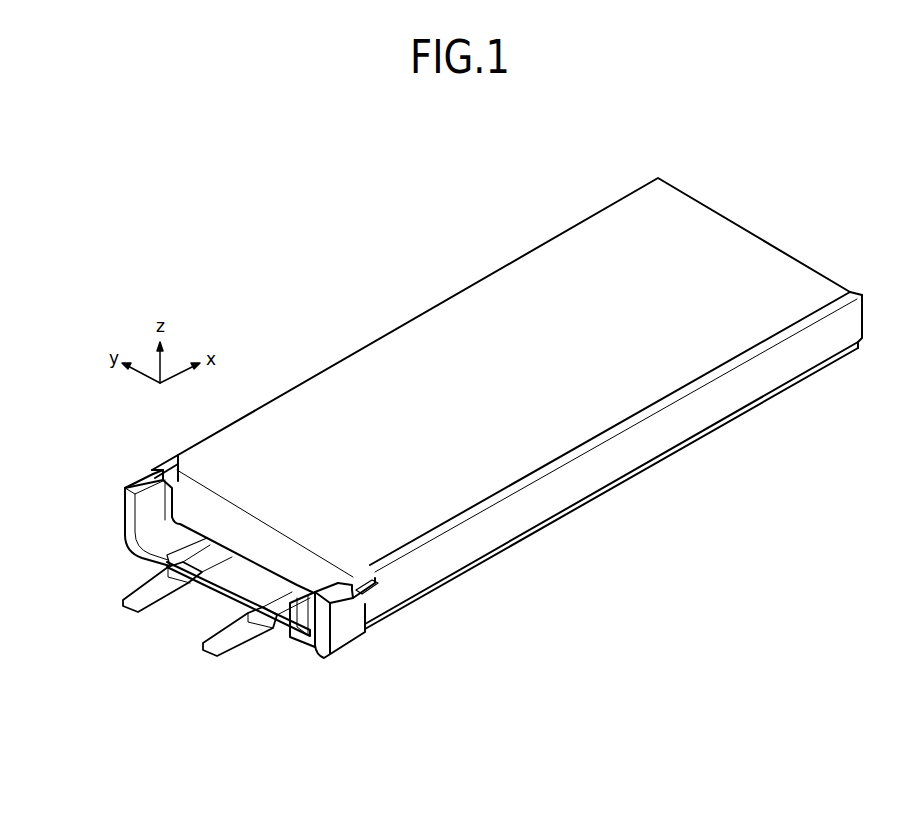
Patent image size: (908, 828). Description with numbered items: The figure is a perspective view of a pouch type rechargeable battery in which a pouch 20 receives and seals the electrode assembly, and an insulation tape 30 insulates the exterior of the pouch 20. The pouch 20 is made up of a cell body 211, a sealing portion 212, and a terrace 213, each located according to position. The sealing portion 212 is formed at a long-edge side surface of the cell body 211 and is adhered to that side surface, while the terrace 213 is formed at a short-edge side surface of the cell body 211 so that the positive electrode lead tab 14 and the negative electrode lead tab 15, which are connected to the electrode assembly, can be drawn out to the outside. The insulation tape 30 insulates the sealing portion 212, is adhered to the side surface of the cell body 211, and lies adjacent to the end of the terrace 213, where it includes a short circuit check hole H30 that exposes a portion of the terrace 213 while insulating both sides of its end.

The positive electrode lead tab 14 is at (230, 652).
The negative electrode lead tab 15 is at (137, 598).
The pouch 20 is at (543, 667).
The insulation tape 30 is at (672, 425).
The cell body 211 is at (737, 250).
The sealing portion 212 is at (580, 509).
The terrace 213 is at (235, 587).
The short circuit check hole H30 is at (372, 590).